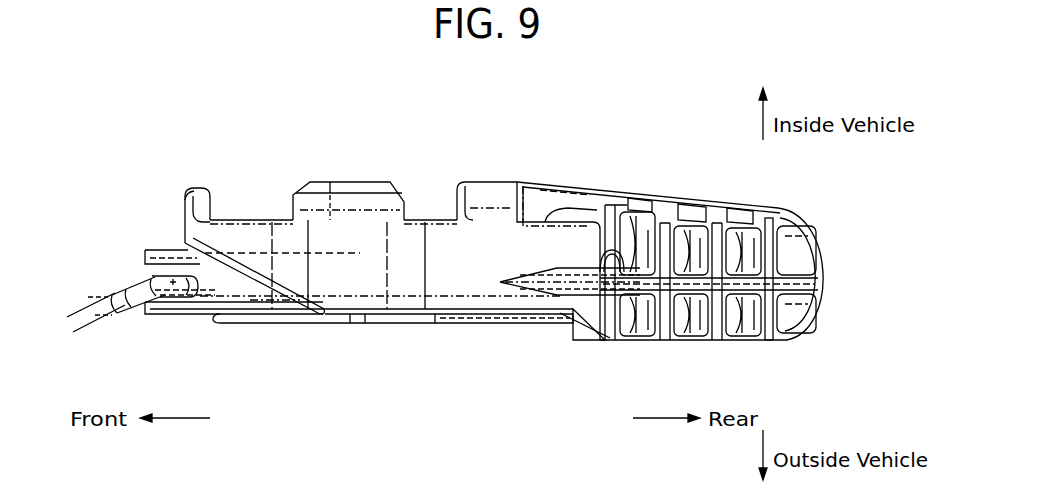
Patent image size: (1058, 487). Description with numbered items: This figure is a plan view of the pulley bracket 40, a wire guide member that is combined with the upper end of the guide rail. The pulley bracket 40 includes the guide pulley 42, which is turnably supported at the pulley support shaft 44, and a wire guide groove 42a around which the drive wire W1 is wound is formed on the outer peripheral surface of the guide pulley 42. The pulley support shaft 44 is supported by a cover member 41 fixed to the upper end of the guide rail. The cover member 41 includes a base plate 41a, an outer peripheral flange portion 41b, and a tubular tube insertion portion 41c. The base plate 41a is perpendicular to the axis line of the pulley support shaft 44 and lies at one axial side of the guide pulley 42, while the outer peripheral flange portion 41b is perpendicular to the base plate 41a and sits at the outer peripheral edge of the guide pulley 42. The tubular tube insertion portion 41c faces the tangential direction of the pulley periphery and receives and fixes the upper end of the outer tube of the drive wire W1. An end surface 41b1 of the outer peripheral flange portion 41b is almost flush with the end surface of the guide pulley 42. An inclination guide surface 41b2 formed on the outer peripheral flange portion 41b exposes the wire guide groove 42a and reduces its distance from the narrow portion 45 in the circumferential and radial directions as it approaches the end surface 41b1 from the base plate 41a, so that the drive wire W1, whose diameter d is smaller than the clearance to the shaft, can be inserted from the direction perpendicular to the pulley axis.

The pulley bracket 40 is at (830, 212).
The cover member 41 is at (570, 234).
The base plate 41a is at (413, 217).
The outer peripheral flange portion 41b is at (473, 292).
The end surface 41b1 is at (520, 318).
The inclination guide surface 41b2 is at (240, 288).
The tubular tube insertion portion 41c is at (787, 221).
The guide pulley 42 is at (205, 316).
The wire guide groove 42a is at (150, 266).
The pulley support shaft 44 is at (355, 206).
The narrow portion 45 is at (349, 314).
The drive wire W1 is at (127, 288).
The diameter of the drive wire d is at (88, 327).